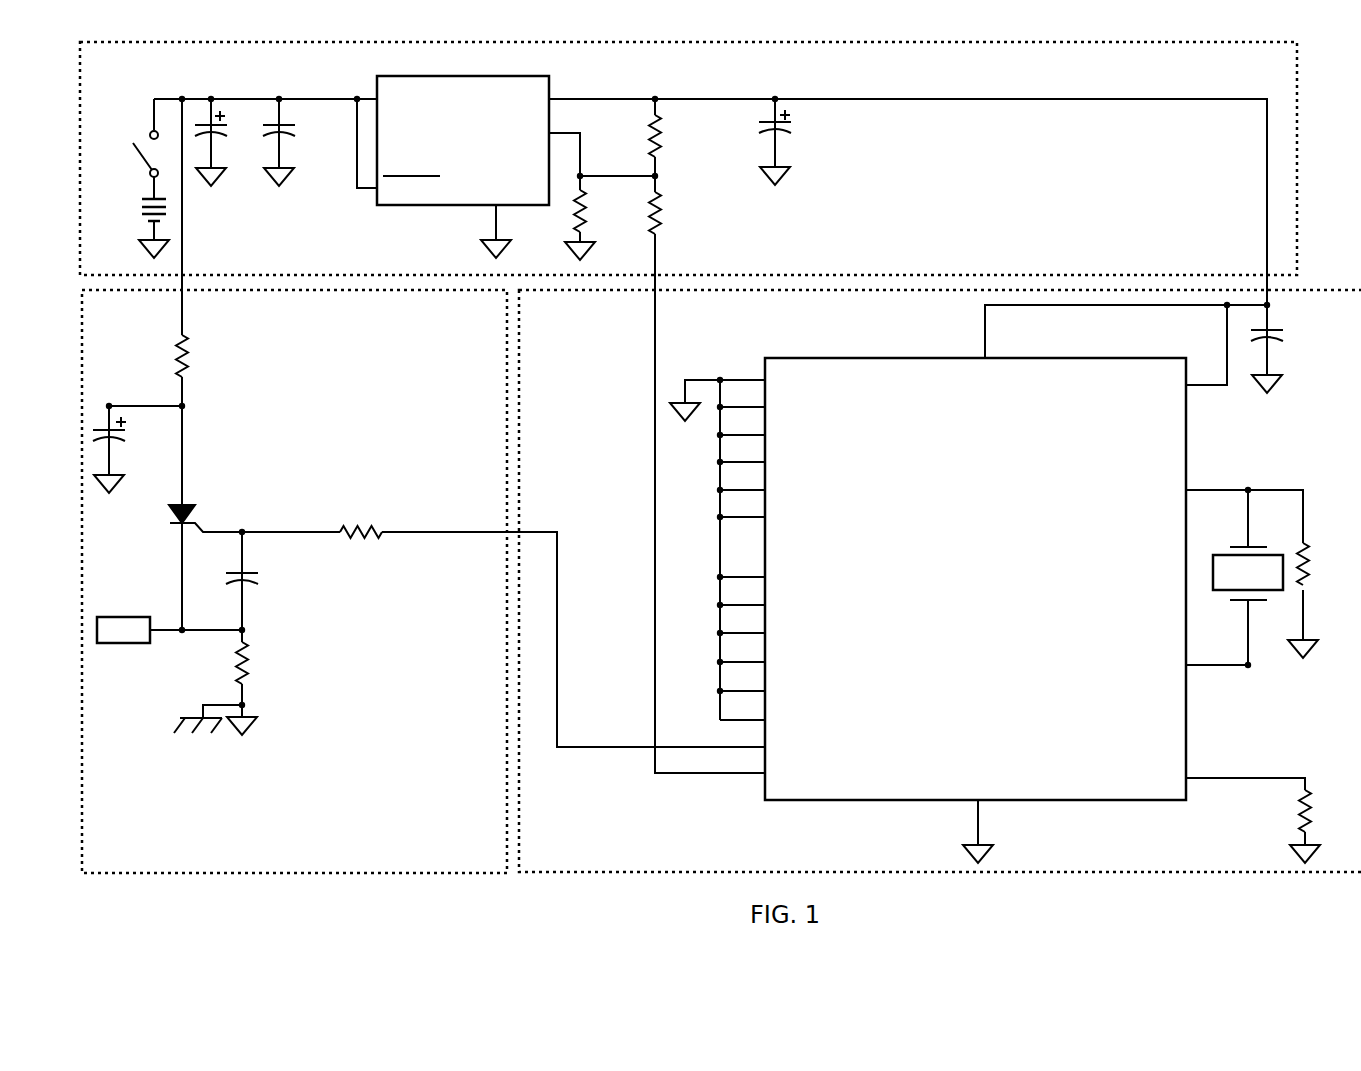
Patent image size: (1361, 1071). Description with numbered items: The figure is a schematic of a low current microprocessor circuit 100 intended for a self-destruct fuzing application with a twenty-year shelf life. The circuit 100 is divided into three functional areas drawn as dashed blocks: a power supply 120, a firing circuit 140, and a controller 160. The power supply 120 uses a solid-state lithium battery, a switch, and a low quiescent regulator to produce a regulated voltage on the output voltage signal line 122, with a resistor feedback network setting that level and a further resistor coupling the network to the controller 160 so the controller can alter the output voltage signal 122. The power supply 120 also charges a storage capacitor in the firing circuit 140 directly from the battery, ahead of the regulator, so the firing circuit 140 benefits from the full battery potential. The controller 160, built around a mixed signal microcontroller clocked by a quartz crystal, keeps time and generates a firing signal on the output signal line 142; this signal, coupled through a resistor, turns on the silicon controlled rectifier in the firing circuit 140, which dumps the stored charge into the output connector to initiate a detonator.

The low current microprocessor circuit 100 is at (1322, 92).
The power supply 120 is at (258, 42).
The output voltage signal line 122 is at (622, 99).
The firing circuit 140 is at (402, 873).
The output signal line 142 is at (543, 503).
The controller 160 is at (1224, 872).